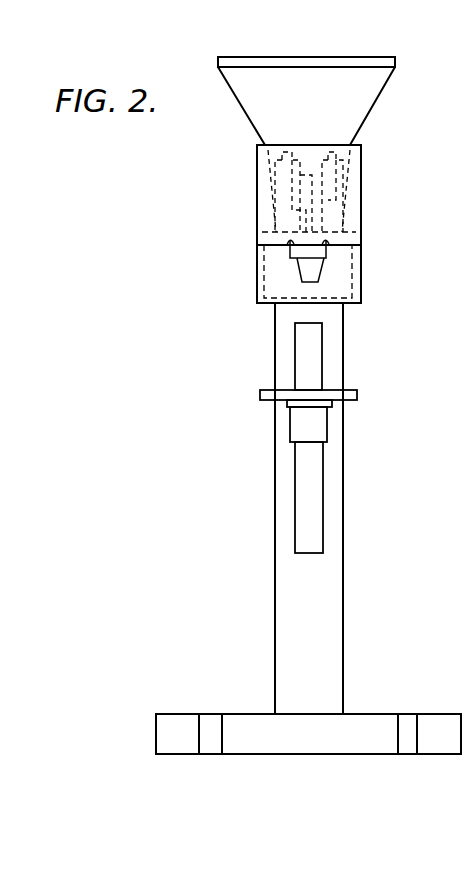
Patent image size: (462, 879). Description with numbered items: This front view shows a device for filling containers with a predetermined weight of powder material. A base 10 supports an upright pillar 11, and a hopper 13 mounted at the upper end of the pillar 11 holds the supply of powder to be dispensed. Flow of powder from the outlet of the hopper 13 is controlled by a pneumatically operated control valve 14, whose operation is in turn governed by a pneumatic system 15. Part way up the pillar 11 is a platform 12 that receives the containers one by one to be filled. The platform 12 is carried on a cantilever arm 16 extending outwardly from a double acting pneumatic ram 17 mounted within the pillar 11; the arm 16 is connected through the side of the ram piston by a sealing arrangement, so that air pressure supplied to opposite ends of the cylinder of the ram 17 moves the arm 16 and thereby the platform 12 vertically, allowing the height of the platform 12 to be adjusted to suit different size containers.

The base 10 is at (178, 714).
The upright pillar 11 is at (285, 600).
The platform 12 is at (260, 393).
The hopper 13 is at (262, 121).
The pneumatically operated control valve 14 is at (302, 265).
The pneumatic system 15 is at (268, 192).
The cantilever arm 16 is at (295, 416).
The double acting pneumatic ram 17 is at (305, 332).